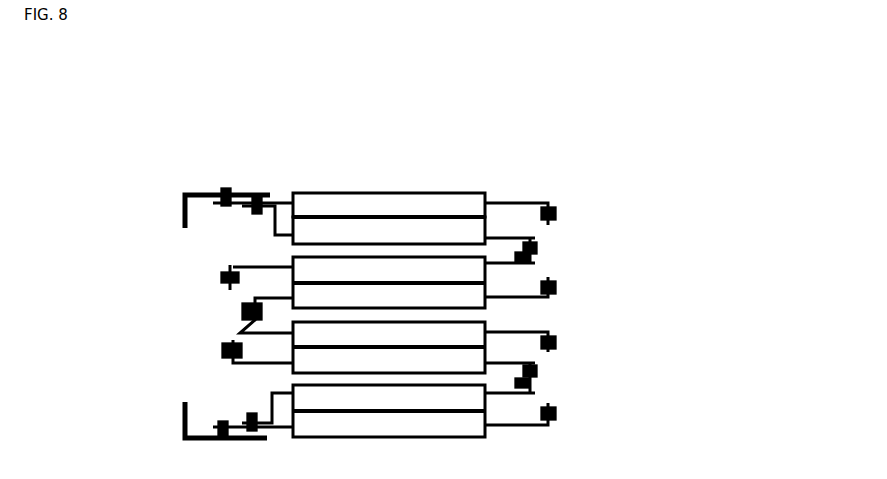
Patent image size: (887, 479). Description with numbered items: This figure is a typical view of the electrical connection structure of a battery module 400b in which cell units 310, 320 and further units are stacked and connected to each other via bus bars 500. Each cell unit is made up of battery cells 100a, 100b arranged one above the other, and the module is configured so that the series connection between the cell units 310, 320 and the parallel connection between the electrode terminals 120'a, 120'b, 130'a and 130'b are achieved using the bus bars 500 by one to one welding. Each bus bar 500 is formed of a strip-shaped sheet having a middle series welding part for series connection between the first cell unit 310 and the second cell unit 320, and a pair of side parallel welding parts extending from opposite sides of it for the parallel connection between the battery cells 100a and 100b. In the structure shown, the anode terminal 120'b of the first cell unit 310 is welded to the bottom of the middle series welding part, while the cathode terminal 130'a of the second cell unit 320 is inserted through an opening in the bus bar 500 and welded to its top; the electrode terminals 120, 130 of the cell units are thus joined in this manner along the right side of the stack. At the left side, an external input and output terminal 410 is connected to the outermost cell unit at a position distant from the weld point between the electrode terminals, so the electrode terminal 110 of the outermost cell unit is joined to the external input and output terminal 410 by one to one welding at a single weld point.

The battery module 400b is at (157, 104).
The battery cell 100a is at (341, 212).
The battery cell 100b is at (403, 238).
The first cell unit 310 is at (468, 172).
The anode terminal 120'b is at (520, 176).
The electrode terminal 120'a is at (557, 194).
The electrode terminal 120 is at (605, 194).
The cathode terminal 130'a is at (566, 295).
The electrode terminal 130 is at (613, 295).
The electrode terminal 130'b is at (570, 302).
The bus bar 500 is at (549, 395).
The external input and output terminal 410 is at (180, 193).
The electrode terminal 110 is at (213, 235).
The second cell unit 320 is at (230, 288).